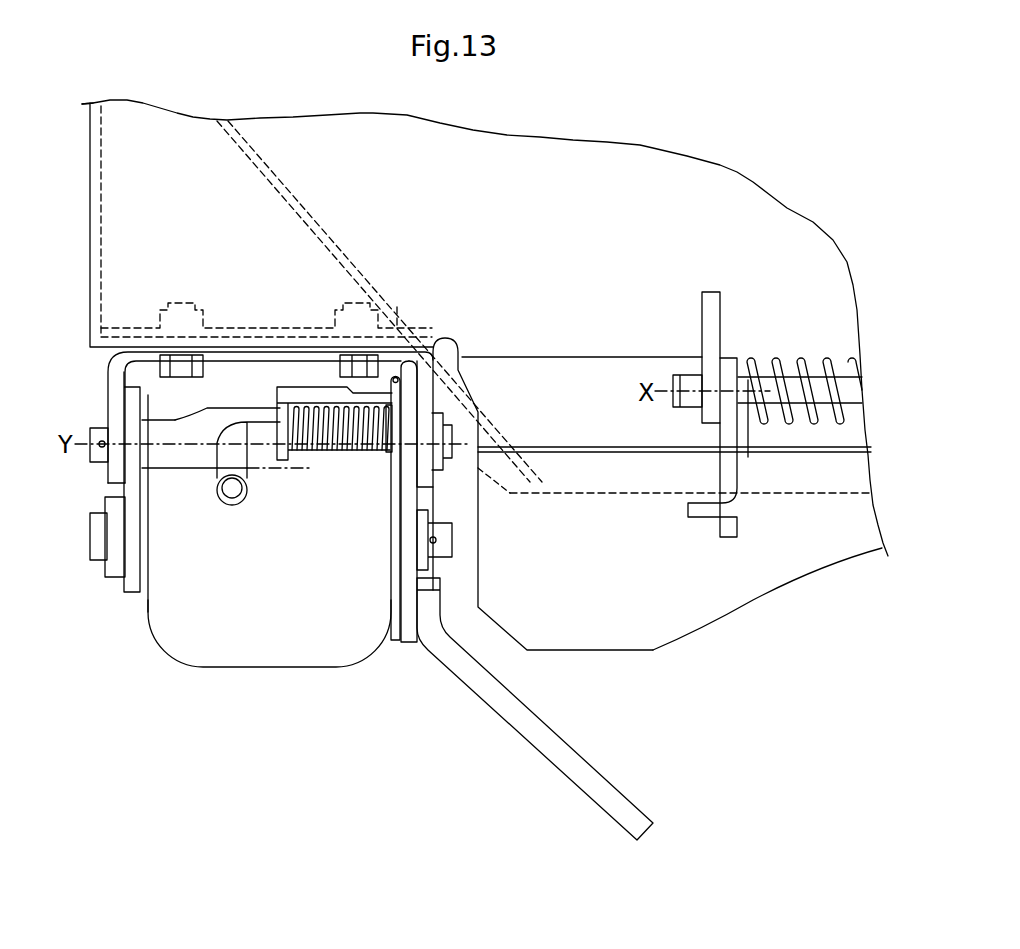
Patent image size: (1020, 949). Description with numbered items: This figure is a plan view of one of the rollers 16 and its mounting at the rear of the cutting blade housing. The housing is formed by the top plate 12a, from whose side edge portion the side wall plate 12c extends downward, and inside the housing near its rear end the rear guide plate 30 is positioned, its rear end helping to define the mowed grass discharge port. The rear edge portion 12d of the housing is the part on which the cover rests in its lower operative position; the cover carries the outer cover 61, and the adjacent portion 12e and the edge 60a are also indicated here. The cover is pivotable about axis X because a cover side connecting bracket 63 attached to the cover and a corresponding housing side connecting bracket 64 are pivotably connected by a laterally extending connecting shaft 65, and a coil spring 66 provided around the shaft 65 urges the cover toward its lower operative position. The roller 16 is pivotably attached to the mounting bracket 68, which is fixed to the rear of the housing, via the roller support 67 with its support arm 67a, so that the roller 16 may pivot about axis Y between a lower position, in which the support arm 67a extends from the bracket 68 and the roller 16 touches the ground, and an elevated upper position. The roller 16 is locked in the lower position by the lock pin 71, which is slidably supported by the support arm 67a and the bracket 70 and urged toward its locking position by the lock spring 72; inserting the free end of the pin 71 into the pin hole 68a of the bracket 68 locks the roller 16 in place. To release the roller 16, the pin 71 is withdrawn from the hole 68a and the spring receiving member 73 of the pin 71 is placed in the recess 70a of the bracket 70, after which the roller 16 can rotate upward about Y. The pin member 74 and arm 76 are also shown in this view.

The top plate 12a is at (748, 187).
The side wall plate 12c is at (90, 205).
The rear edge portion 12d is at (622, 493).
The panel corner portion 12e is at (510, 493).
The roller 16 is at (263, 667).
The rear guide plate 30 is at (309, 213).
The frame edge 60a is at (808, 583).
The outer cover 61 is at (600, 646).
The cover side connecting bracket 63 is at (721, 477).
The housing side connecting bracket 64 is at (705, 307).
The connecting shaft 65 is at (682, 377).
The coil spring 66 is at (802, 354).
The roller support 67 is at (111, 599).
The support arm 67a is at (400, 642).
The mounting bracket 68 is at (108, 392).
The pin hole 68a is at (450, 432).
The bracket 70 is at (275, 400).
The recess 70a is at (352, 391).
The lock pin 71 is at (246, 458).
The lock spring 72 is at (320, 458).
The spring receiving member 73 is at (388, 452).
The lock pin 74 is at (396, 376).
The operating arm 76 is at (523, 733).